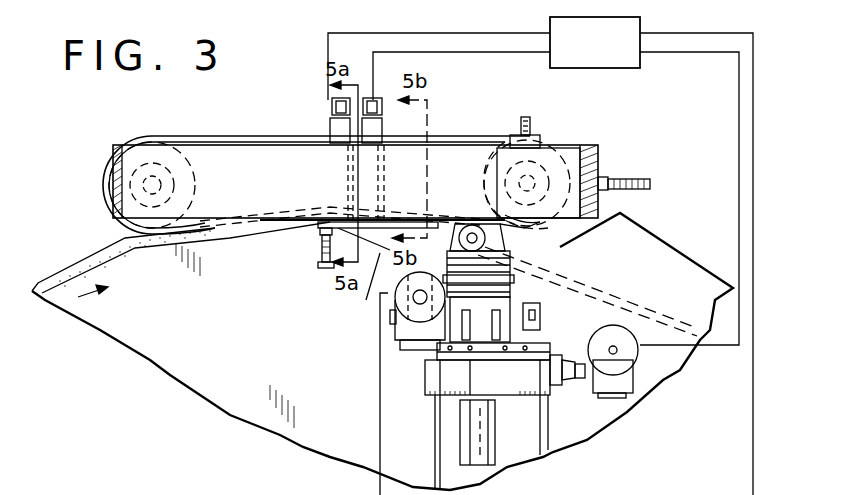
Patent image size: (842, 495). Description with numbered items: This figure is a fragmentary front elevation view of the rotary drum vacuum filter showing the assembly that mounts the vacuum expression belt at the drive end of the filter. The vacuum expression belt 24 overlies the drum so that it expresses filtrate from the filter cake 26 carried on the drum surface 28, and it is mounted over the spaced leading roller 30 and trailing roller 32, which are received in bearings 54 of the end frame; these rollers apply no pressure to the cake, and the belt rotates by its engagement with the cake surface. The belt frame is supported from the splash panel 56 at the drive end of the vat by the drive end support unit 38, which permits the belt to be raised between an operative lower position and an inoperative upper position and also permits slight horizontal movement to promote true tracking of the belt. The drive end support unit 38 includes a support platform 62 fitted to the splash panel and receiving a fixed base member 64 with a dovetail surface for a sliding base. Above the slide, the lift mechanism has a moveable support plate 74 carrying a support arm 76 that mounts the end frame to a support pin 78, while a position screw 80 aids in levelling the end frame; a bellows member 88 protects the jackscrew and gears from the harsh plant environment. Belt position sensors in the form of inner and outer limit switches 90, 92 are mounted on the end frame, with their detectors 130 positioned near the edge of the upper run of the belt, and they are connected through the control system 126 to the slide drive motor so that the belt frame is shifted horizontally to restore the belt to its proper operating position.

The vacuum expression belt 24 is at (273, 138).
The filter cake 26 is at (72, 272).
The drum surface 28 is at (116, 258).
The leading roller 30 is at (113, 178).
The trailing roller 32 is at (576, 148).
The drive end support unit 38 is at (370, 325).
The bearings 54 is at (146, 170).
The splash panel 56 is at (251, 330).
The support platform 62 is at (436, 436).
The fixed base member 64 is at (428, 378).
The moveable support plate 74 is at (552, 252).
The support arm 76 is at (360, 286).
The support pin 78 is at (471, 232).
The position screw 80 is at (318, 263).
The bellows member 88 is at (510, 281).
The inner limit switch 90 is at (379, 100).
The outer limit switch 92 is at (330, 108).
The control system 126 is at (612, 54).
The detectors 130 is at (356, 173).